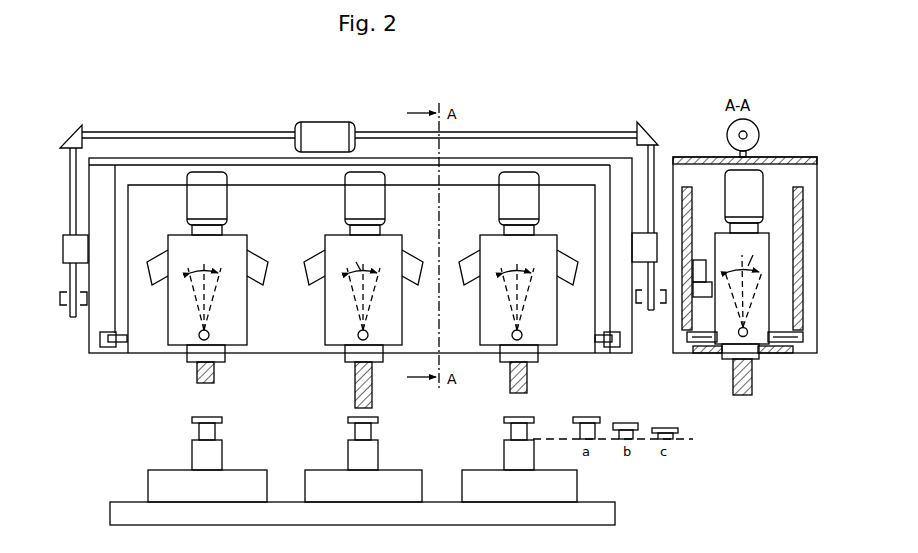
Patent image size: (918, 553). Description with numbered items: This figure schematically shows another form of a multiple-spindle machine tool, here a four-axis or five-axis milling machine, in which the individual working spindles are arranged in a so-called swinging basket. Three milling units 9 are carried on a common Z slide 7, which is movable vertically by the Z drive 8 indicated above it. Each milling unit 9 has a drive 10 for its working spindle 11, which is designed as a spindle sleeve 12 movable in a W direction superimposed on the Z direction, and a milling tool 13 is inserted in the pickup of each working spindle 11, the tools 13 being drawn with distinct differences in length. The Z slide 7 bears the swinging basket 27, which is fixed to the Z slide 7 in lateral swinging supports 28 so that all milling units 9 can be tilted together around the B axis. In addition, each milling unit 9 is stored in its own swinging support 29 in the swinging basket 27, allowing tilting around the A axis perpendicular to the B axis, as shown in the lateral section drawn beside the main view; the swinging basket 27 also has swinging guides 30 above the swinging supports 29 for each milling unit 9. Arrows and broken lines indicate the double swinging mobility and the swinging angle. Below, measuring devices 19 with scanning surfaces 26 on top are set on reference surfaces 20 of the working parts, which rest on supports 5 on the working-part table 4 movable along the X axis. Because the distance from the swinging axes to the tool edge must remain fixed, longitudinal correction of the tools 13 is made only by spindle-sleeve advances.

The working-part table 4 is at (585, 512).
The support block 5 is at (558, 485).
The Z slide 7 is at (495, 158).
The Z drive 8 is at (328, 135).
The milling unit 9 is at (533, 246).
The drive 10 is at (522, 203).
The working spindle 11 is at (530, 365).
The spindle sleeve 12 is at (507, 360).
The milling tool 13 is at (528, 387).
The measuring device 19 is at (504, 448).
The reference surface 20 is at (547, 470).
The scanning surface 26 is at (504, 420).
The swinging basket 27 is at (403, 205).
The lateral swinging support 28 is at (116, 350).
The swinging support 29 is at (368, 335).
The swinging guide 30 is at (417, 263).